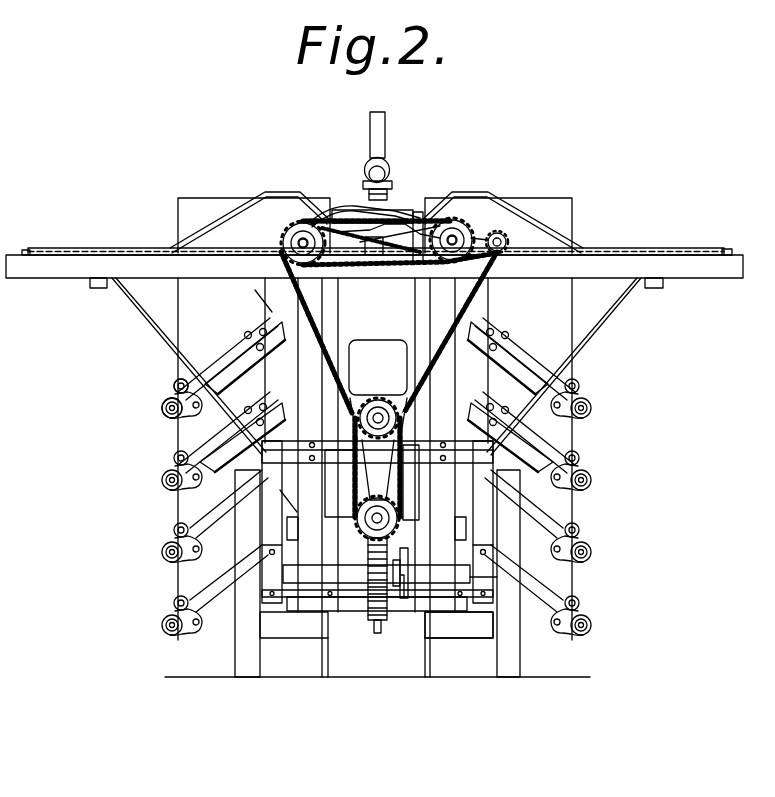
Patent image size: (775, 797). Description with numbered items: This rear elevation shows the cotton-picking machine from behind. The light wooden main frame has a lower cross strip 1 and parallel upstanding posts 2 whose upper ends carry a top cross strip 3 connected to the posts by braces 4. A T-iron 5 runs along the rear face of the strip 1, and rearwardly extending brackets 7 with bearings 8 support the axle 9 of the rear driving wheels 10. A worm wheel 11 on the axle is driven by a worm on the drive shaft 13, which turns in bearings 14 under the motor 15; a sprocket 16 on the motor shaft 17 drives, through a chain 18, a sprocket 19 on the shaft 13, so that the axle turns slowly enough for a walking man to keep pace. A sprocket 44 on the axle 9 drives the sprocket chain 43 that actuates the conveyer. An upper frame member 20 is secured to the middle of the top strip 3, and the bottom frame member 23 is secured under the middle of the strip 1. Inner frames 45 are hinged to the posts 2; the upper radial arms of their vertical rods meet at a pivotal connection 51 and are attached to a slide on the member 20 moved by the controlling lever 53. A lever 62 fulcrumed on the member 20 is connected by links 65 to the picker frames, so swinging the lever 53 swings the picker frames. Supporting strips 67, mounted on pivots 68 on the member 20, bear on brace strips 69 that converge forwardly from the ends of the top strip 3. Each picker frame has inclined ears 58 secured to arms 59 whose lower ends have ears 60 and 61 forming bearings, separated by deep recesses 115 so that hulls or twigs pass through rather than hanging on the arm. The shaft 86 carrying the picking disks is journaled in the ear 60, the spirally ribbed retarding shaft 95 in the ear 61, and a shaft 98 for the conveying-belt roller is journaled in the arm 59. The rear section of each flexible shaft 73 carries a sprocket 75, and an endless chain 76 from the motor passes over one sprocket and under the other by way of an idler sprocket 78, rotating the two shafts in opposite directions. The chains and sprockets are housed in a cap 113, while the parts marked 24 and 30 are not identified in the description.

The cross strip 1 is at (323, 612).
The upstanding posts 2 is at (300, 340).
The top cross strip 3 is at (662, 256).
The braces 4 is at (120, 300).
The T-iron 5 is at (460, 600).
The rearwardly extending brackets 7 is at (262, 520).
The bearings 8 is at (262, 595).
The axle 9 is at (318, 572).
The driving wheels 10 is at (515, 670).
The worm wheel 11 is at (368, 640).
The drive shaft 13 is at (360, 504).
The bearings 14 is at (355, 482).
The motor 15 is at (378, 367).
The sprocket 16 is at (400, 425).
The motor shaft 17 is at (398, 410).
The chain 18 is at (405, 484).
The sprocket 19 is at (400, 515).
The upper frame member 20 is at (376, 255).
The bottom frame member 23 is at (375, 635).
The rod 24 is at (380, 114).
The ball 30 is at (380, 170).
The sprocket chain 43 is at (500, 580).
The sprocket 44 is at (405, 600).
The inner frames 45 is at (410, 319).
The pivotal connection 51 is at (247, 297).
The controlling lever 53 is at (455, 218).
The ears 58 is at (245, 330).
The arms 59 is at (232, 355).
The ear 60 is at (162, 406).
The ear 61 is at (172, 535).
The lever 62 is at (405, 210).
The link 65 is at (345, 206).
The supporting strips 67 is at (100, 255).
The pivots 68 is at (405, 224).
The brace strips 69 is at (213, 215).
The flexible shaft 73 is at (304, 222).
The sprocket 75 is at (305, 240).
The endless chain 76 is at (540, 246).
The idler sprocket 78 is at (505, 235).
The shaft 86 is at (165, 415).
The shaft 95 is at (172, 382).
The shafts 98 is at (170, 392).
The cap 113 is at (183, 198).
The recesses 115 is at (178, 604).